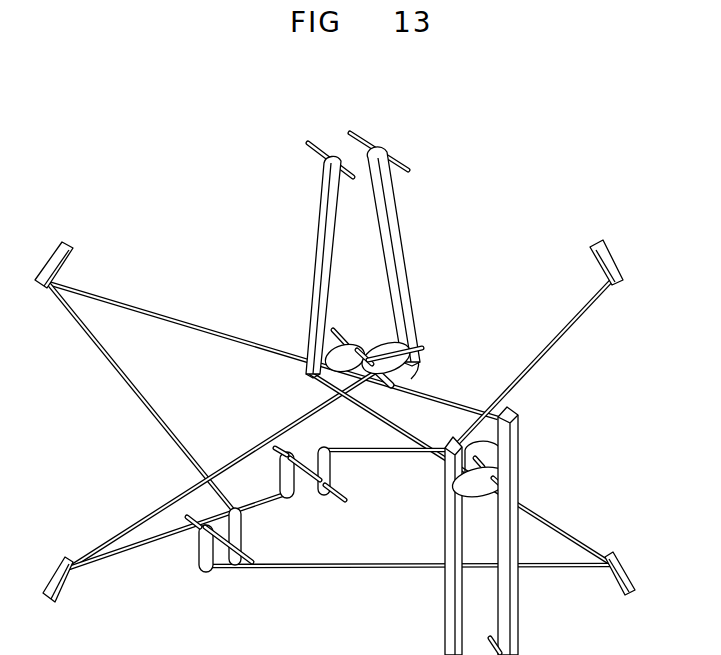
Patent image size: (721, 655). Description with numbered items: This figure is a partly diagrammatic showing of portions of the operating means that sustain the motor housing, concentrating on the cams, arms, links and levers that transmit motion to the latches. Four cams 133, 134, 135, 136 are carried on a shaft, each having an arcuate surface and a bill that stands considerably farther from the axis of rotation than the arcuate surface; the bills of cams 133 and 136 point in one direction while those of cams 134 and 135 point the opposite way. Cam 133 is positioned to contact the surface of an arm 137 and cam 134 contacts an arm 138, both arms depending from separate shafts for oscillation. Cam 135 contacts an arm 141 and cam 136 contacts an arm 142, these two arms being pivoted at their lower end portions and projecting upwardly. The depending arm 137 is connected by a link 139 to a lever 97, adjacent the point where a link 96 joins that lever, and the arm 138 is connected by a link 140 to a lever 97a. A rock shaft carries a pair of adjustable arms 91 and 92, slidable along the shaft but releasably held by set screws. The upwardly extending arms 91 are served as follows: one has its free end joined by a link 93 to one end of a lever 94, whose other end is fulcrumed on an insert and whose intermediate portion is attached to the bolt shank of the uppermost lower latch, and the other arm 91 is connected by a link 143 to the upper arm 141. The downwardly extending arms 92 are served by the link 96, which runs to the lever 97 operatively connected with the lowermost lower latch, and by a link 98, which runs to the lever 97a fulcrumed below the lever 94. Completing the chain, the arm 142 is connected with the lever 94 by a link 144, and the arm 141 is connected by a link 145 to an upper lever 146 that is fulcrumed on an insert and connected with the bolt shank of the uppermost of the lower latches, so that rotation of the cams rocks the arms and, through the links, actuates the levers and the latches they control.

The adjustable arm 91 is at (330, 472).
The adjustable arm 92 is at (281, 478).
The link 93 is at (152, 405).
The lever 94 is at (62, 268).
The link 96 is at (310, 568).
The lever 97 is at (632, 590).
The lever 97a is at (58, 600).
The link 98 is at (140, 547).
The cam 133 is at (345, 352).
The cam 134 is at (399, 344).
The cam 135 is at (487, 456).
The cam 136 is at (470, 495).
The arm 137 is at (318, 228).
The arm 138 is at (400, 219).
The link 139 is at (388, 421).
The link 140 is at (173, 500).
The arm 141 is at (448, 630).
The arm 142 is at (520, 628).
The link 143 is at (406, 455).
The link 144 is at (165, 319).
The link 145 is at (545, 349).
The upper lever 146 is at (612, 256).